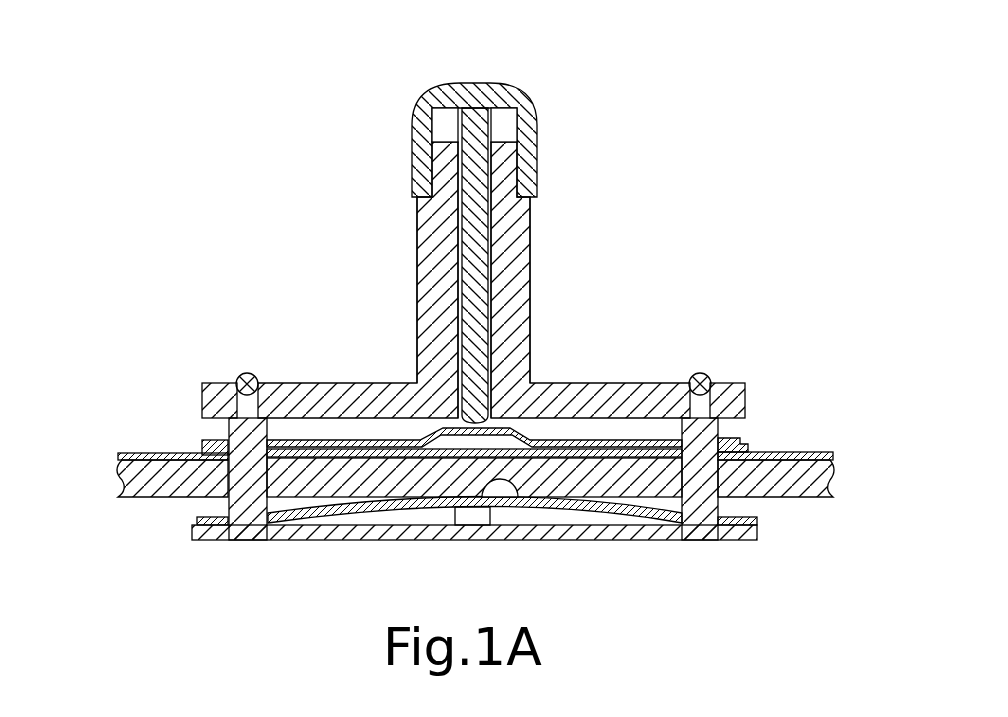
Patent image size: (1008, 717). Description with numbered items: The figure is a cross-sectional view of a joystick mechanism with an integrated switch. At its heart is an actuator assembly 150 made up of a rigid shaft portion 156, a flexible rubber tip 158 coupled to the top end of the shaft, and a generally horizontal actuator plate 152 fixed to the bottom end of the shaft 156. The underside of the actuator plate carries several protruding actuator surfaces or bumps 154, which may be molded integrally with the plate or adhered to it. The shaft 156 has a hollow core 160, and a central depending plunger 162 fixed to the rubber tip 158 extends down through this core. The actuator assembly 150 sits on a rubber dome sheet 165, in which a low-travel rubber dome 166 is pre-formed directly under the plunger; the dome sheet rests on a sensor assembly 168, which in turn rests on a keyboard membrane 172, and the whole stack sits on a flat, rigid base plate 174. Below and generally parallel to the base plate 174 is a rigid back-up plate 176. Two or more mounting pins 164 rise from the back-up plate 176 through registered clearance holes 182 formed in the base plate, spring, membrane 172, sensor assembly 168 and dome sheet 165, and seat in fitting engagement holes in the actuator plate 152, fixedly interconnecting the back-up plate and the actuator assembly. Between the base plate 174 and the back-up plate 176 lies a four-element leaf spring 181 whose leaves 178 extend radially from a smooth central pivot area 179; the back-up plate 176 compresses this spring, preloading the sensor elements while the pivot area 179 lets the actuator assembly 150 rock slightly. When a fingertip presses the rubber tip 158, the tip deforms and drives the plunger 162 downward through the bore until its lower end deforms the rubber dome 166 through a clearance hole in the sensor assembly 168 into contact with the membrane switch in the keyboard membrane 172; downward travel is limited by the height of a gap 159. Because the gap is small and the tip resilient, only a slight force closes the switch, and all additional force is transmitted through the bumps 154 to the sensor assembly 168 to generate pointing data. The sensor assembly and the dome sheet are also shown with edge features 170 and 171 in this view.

The actuator assembly 150 is at (538, 272).
The actuator plate 152 is at (578, 382).
The actuator surfaces 154 is at (327, 430).
The rigid shaft portion 156 is at (532, 218).
The rubber tip 158 is at (538, 122).
The gap 159 is at (443, 127).
The hollow core 160 is at (457, 233).
The depending plunger 162 is at (472, 298).
The mounting pins 164 is at (720, 430).
The rubber dome sheet 165 is at (203, 438).
The rubber dome 166 is at (448, 428).
The sensor assembly 168 is at (200, 447).
The spacer 170 is at (750, 450).
The O-ring 171 is at (712, 368).
The keyboard membrane 172 is at (807, 453).
The base plate 174 is at (790, 495).
The back-up plate 176 is at (678, 540).
The leaves 178 is at (360, 510).
The central pivot area 179 is at (527, 503).
The leaf spring 181 is at (412, 510).
The clearance holes 182 is at (198, 488).